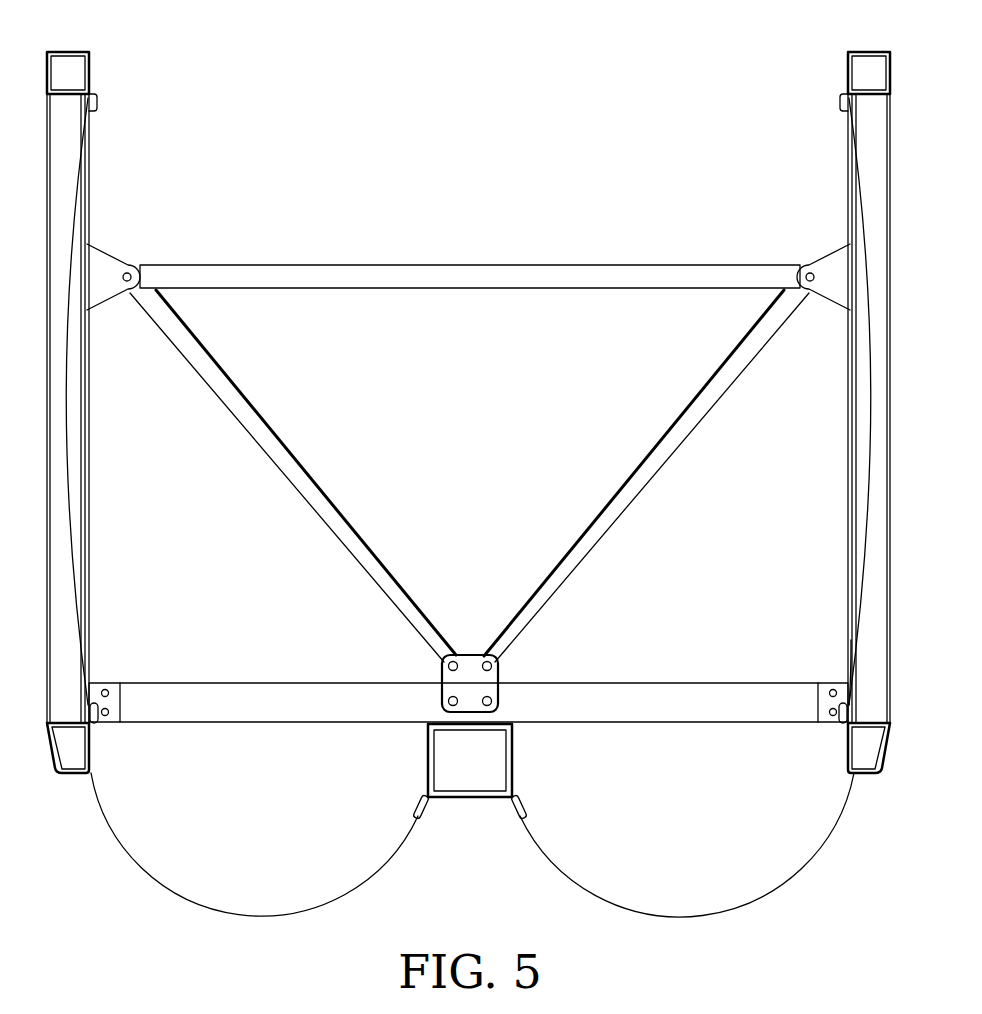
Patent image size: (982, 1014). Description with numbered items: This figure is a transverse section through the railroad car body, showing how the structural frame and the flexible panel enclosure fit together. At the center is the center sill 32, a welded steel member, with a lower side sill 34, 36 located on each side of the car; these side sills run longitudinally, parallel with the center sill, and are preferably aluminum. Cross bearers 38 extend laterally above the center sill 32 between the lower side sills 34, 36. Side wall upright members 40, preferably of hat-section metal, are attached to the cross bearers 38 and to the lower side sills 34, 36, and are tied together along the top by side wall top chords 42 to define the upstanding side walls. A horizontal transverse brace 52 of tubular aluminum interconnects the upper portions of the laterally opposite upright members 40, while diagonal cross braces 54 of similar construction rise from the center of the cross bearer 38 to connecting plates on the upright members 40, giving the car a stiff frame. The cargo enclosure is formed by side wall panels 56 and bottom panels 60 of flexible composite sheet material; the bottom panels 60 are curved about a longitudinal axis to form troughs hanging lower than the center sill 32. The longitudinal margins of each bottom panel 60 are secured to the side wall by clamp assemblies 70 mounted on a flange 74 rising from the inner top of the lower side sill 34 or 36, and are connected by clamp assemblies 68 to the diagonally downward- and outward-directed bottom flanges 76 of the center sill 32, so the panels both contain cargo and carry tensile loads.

The center sill 32 is at (512, 763).
The lower side sill 34 is at (865, 775).
The lower side sill 36 is at (78, 775).
The cross bearer 38 is at (683, 697).
The side wall upright member 40 is at (90, 548).
The side wall top chord 42 is at (91, 68).
The horizontal transverse brace 52 is at (400, 273).
The diagonal cross brace 54 is at (365, 525).
The side wall panel 56 is at (68, 412).
The bottom panel 60 is at (245, 916).
The clamp assembly 68 is at (97, 103).
The clamp assembly 70 is at (96, 720).
The flange 74 is at (850, 708).
The bottom flange 76 is at (421, 817).